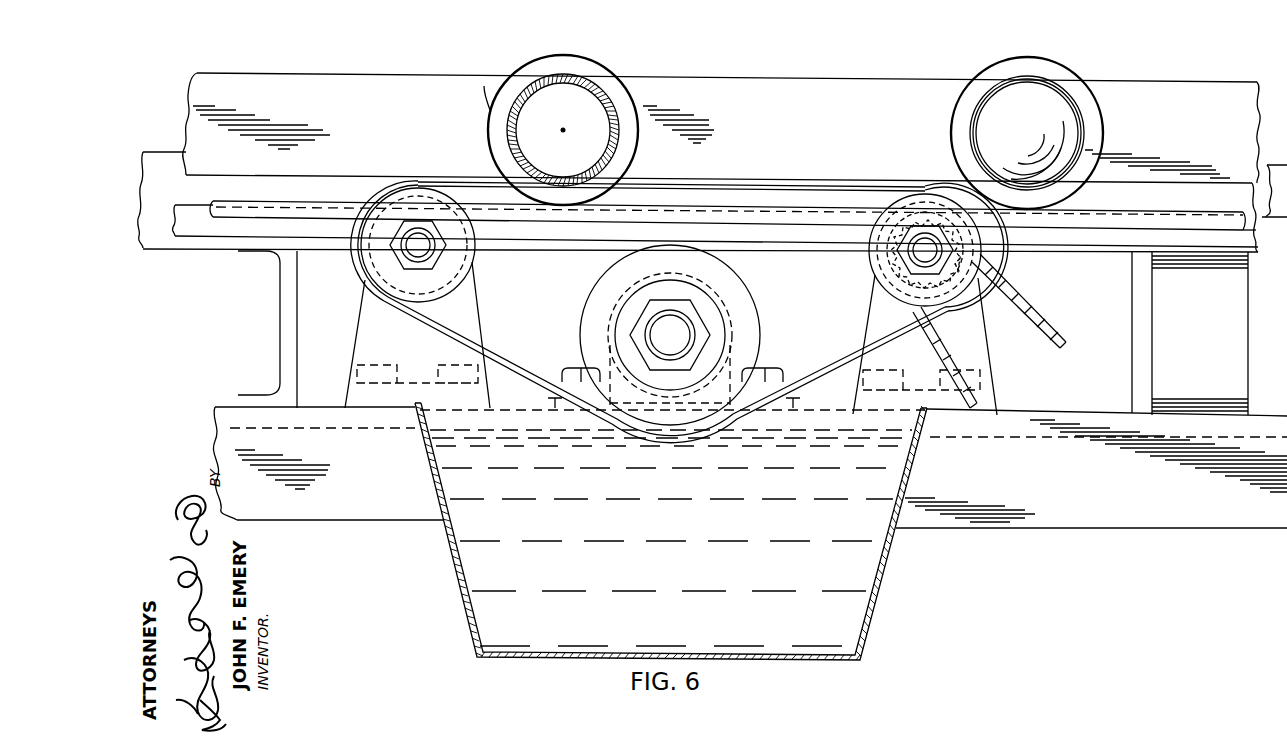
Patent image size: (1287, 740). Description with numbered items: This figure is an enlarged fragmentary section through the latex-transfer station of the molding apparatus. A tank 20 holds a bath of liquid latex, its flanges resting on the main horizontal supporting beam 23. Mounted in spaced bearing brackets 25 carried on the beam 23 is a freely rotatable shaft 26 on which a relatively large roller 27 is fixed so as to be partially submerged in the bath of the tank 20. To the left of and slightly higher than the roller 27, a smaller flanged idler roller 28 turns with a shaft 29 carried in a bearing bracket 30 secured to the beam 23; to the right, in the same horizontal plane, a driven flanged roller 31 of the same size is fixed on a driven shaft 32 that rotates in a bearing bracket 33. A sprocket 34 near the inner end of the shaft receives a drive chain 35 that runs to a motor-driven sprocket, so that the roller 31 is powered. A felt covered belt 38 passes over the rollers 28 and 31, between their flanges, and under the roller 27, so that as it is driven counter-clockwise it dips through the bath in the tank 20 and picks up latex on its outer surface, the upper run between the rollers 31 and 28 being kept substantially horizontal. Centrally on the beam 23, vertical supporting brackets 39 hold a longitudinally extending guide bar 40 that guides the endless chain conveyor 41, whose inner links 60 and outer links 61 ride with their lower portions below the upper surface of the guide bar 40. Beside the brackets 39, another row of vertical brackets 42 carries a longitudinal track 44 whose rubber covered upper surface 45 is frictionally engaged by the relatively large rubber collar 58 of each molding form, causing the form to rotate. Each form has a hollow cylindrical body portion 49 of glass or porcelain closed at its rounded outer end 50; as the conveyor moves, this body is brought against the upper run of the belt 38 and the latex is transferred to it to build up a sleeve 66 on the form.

The tank 20 is at (855, 637).
The main horizontal supporting beam 23 is at (953, 517).
The bearing bracket 25 is at (726, 355).
The shaft 26 is at (680, 328).
The roller 27 is at (742, 314).
The idler roller 28 is at (447, 272).
The shaft 29 is at (412, 252).
The bearing bracket 30 is at (466, 312).
The driven roller 31 is at (912, 291).
The driven shaft 32 is at (933, 252).
The bearing bracket 33 is at (978, 350).
The sprocket 34 is at (880, 281).
The drive chain 35 is at (1042, 332).
The belt 38 is at (503, 364).
The vertical supporting bracket 39 is at (286, 330).
The guide bar 40 is at (162, 160).
The endless chain conveyor 41 is at (700, 78).
The vertical supporting bracket 42 is at (1240, 312).
The track 44 is at (244, 218).
The rubber covered upper surface 45 is at (226, 210).
The hollow cylindrical body portion 49 is at (605, 96).
The rounded end 50 is at (1048, 100).
The rubber collar 58 is at (594, 82).
The inner link 60 is at (318, 87).
The outer link 61 is at (655, 86).
The sleeve 66 is at (542, 74).